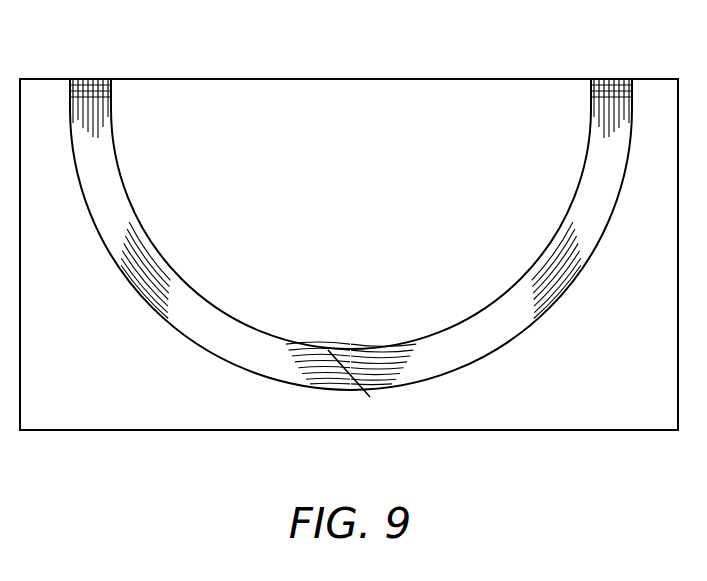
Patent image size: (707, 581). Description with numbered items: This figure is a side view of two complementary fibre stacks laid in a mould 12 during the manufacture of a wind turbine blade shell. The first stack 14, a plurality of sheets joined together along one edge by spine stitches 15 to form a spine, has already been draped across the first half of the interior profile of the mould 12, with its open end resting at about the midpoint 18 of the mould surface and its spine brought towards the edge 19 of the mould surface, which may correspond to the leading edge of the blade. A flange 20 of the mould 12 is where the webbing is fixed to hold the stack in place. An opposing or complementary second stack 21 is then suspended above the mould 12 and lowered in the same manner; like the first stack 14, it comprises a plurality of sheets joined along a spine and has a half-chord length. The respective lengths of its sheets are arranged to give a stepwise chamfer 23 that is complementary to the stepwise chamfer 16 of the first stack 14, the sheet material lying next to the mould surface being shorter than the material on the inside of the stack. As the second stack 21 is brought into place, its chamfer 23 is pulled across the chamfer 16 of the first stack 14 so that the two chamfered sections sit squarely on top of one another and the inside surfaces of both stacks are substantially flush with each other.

The mould 12 is at (614, 419).
The first stack 14 is at (112, 188).
The spine stitches 15 is at (112, 85).
The stepwise chamfered edge 16 is at (313, 358).
The midpoint 18 is at (370, 397).
The edge 19 is at (70, 80).
The flange 20 is at (631, 80).
The second stack 21 is at (470, 327).
The stepwise chamfer 23 is at (378, 358).